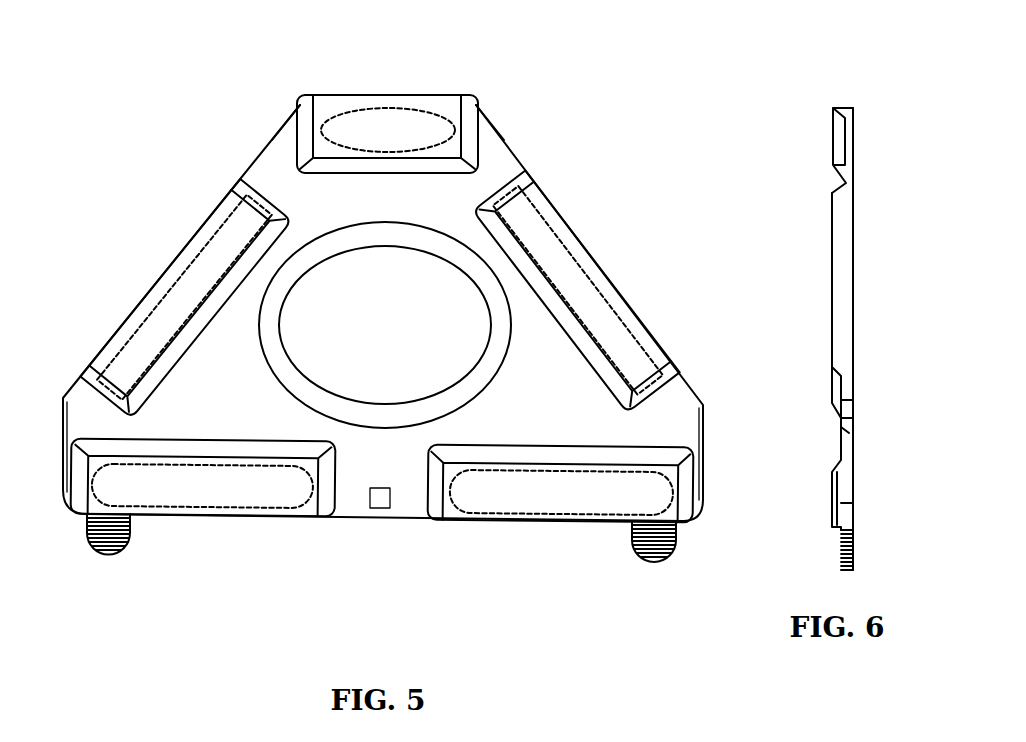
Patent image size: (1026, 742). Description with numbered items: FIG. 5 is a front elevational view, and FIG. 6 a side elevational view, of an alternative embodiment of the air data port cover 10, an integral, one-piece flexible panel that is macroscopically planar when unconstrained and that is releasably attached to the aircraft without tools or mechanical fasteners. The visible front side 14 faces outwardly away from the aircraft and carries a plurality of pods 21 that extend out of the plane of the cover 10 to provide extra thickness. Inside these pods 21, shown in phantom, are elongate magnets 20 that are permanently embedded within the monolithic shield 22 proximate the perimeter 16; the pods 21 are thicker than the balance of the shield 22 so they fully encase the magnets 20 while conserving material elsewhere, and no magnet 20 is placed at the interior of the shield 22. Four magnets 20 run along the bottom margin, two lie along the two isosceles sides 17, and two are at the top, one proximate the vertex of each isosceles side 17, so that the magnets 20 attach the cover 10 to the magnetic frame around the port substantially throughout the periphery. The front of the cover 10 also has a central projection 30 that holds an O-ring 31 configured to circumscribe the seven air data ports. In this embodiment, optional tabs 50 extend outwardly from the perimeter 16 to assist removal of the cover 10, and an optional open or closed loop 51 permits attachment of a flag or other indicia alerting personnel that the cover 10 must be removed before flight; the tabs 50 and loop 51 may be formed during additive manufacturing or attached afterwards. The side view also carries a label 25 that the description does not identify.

In FIG. 5, the air data port cover 10 is at (588, 60).
In FIG. 6, the air data port cover 10 is at (787, 117).
In FIG. 5, the front side 14 is at (198, 399).
In FIG. 6, the front side 14 is at (831, 208).
In FIG. 5, the perimeter 16 is at (448, 98).
In FIG. 6, the perimeter 16 is at (843, 106).
In FIG. 5, the isosceles sides 17 is at (284, 122).
In FIG. 6, the isosceles sides 17 is at (843, 335).
In FIG. 5, the magnets 20 is at (389, 128).
In FIG. 5, the pods 21 is at (333, 99).
In FIG. 6, the pods 21 is at (838, 278).
In FIG. 5, the shield 22 is at (528, 401).
In FIG. 6, the top surface 25 is at (853, 207).
In FIG. 5, the central projection 30 is at (441, 277).
In FIG. 5, the O-ring 31 is at (402, 248).
In FIG. 5, the tabs 50 is at (128, 540).
In FIG. 6, the tabs 50 is at (840, 547).
In FIG. 5, the loop 51 is at (381, 508).